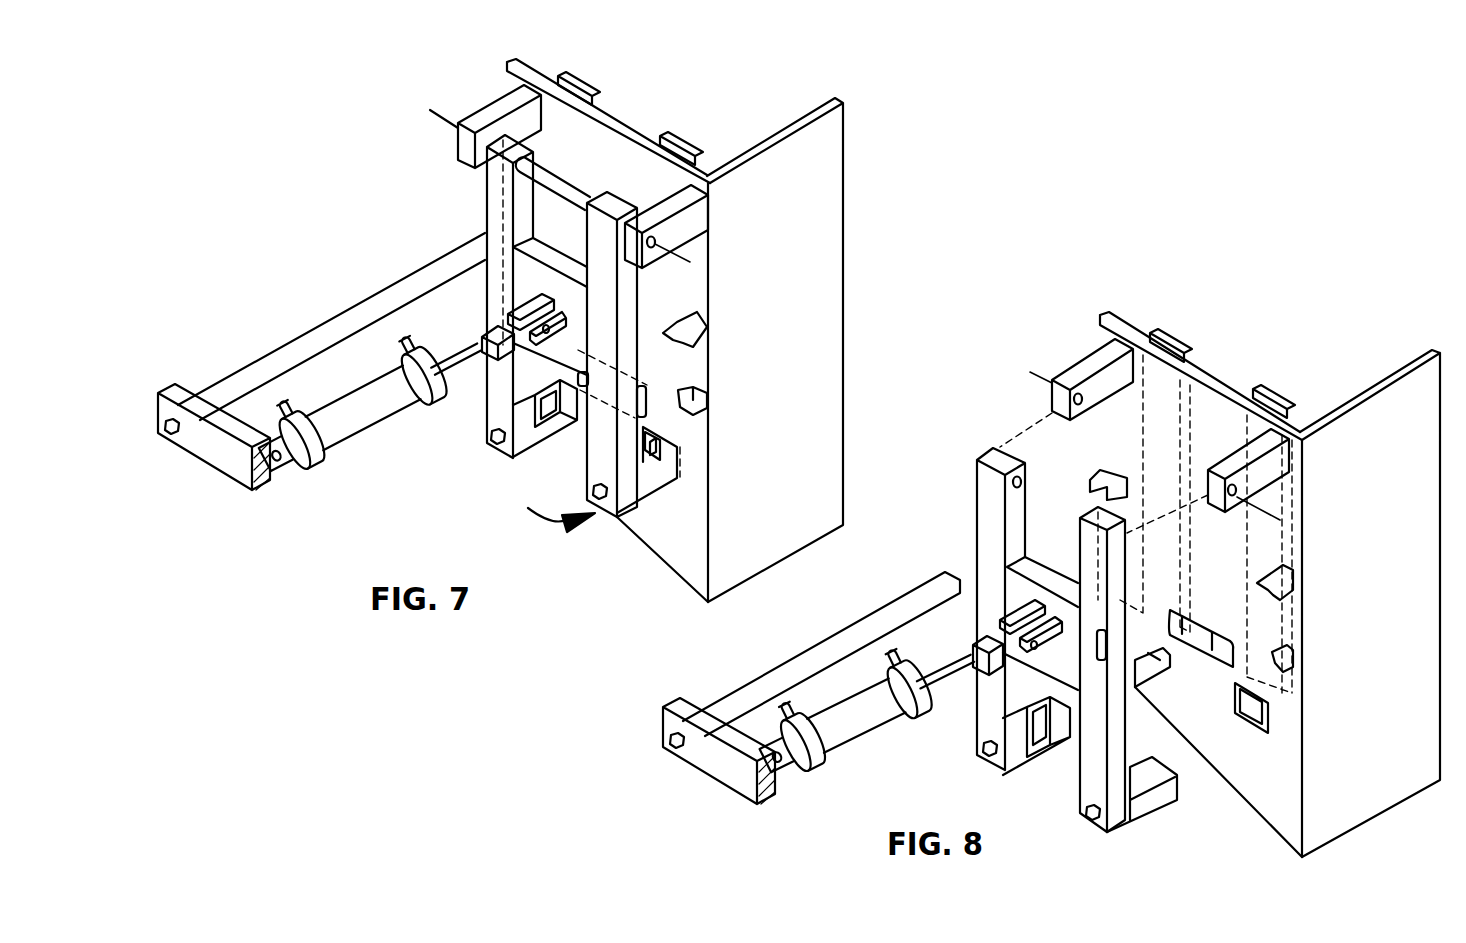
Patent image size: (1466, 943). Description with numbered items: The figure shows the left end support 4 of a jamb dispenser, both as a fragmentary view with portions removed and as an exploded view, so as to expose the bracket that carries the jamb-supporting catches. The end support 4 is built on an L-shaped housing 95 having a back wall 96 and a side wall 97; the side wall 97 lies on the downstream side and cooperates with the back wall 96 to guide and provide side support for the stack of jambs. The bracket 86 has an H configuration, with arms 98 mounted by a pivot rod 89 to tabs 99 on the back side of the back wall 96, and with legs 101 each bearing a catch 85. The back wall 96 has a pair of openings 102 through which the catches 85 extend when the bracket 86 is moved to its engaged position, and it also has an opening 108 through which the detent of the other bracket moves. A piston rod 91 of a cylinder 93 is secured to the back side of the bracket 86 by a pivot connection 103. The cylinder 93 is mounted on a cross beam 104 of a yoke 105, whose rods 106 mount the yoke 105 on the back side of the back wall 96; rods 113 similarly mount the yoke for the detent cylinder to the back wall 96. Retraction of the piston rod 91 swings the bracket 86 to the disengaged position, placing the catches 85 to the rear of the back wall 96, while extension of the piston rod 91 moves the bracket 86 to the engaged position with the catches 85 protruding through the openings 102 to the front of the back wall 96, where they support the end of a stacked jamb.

In FIG. 7, the end support 4 is at (620, 122).
In FIG. 8, the end support 4 is at (1213, 380).
In FIG. 7, the side wall 97 is at (796, 266).
In FIG. 8, the side wall 97 is at (1403, 488).
In FIG. 7, the tabs 99 is at (500, 118).
In FIG. 8, the tabs 99 is at (1075, 377).
In FIG. 7, the arms 98 is at (618, 207).
In FIG. 8, the arms 98 is at (1090, 555).
In FIG. 7, the pivot rod 89 is at (577, 205).
In FIG. 7, the bracket 86 is at (616, 343).
In FIG. 8, the bracket 86 is at (1096, 668).
In FIG. 7, the back wall 96 is at (688, 300).
In FIG. 8, the back wall 96 is at (1263, 770).
In FIG. 7, the catches 85 is at (552, 408).
In FIG. 8, the catches 85 is at (1045, 715).
In FIG. 7, the legs 101 is at (500, 400).
In FIG. 8, the legs 101 is at (1060, 793).
In FIG. 7, the openings 102 is at (675, 447).
In FIG. 8, the openings 102 is at (1213, 712).
In FIG. 7, the L-shaped housing 95 is at (667, 545).
In FIG. 8, the L-shaped housing 95 is at (1288, 815).
In FIG. 7, the pivot connection 103 is at (530, 298).
In FIG. 8, the pivot connection 103 is at (1010, 630).
In FIG. 7, the cylinder 93 is at (387, 421).
In FIG. 8, the cylinder 93 is at (894, 730).
In FIG. 7, the piston rod 91 is at (458, 352).
In FIG. 8, the piston rod 91 is at (960, 690).
In FIG. 7, the cross beam 104 is at (220, 453).
In FIG. 8, the cross beam 104 is at (710, 765).
In FIG. 7, the rods 106 is at (406, 268).
In FIG. 8, the rods 106 is at (876, 604).
In FIG. 7, the rods 113 is at (702, 398).
In FIG. 8, the rods 113 is at (1293, 656).
In FIG. 7, the yoke 105 is at (280, 275).
In FIG. 8, the yoke 105 is at (745, 655).
In FIG. 8, the opening 108 is at (1203, 632).